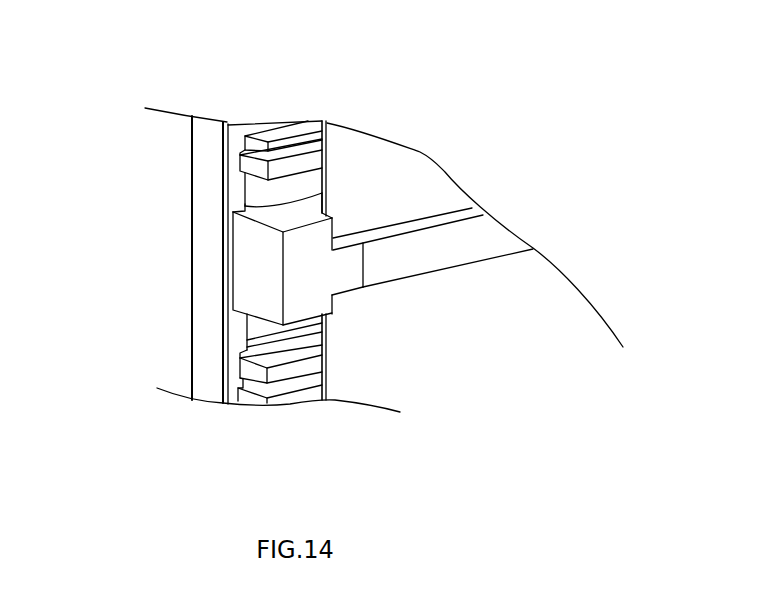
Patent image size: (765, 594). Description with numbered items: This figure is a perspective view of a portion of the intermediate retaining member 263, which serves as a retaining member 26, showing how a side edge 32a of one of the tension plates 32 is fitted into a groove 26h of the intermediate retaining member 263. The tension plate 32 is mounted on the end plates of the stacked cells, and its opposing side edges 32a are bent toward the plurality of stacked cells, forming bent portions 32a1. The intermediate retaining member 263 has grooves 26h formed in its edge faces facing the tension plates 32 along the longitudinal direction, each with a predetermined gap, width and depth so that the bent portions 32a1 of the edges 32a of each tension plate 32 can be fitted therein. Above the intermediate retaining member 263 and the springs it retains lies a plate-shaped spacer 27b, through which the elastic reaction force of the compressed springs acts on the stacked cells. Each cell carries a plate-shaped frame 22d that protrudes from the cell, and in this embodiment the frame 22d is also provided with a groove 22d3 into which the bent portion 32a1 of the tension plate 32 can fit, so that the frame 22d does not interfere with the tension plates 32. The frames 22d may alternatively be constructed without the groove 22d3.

The frame 22d is at (298, 150).
The groove 22d3 is at (243, 147).
The spacer 27b is at (300, 188).
The groove 26h is at (238, 207).
The intermediate retaining member 263 is at (417, 258).
The retaining member 26 is at (470, 266).
The tension plate 32 is at (146, 350).
The side edge 32a is at (205, 395).
The bent portion 32a1 is at (232, 395).